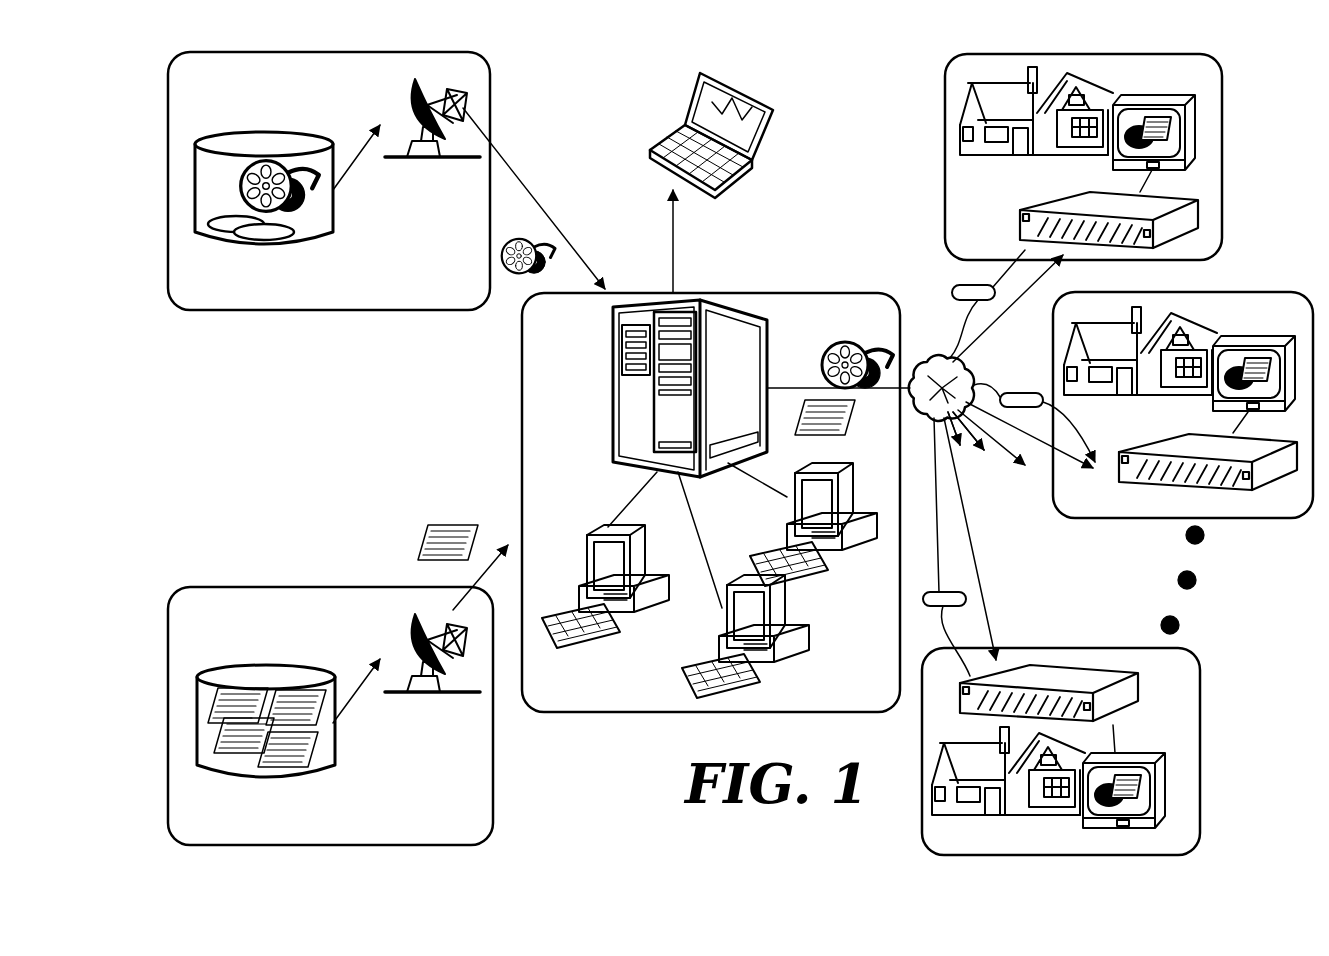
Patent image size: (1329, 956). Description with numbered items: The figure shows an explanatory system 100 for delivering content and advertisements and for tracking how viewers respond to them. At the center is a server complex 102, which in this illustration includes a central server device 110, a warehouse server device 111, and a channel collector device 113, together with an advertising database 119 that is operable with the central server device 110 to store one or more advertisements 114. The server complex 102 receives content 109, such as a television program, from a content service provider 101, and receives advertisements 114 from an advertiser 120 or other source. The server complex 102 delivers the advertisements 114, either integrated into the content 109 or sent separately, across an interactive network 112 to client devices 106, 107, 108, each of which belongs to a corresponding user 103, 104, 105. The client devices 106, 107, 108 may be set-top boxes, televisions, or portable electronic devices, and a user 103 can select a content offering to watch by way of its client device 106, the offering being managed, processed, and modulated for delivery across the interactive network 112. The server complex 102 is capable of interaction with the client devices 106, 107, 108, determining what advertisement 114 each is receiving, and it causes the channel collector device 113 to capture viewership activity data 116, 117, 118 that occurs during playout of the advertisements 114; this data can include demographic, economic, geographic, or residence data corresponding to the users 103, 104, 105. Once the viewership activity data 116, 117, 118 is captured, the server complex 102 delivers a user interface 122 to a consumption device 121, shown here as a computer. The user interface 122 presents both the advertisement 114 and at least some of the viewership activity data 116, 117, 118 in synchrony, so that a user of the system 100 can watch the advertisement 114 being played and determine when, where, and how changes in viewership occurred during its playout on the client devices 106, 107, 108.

The system 100 is at (303, 408).
The content service provider 101 is at (491, 110).
The server complex 102 is at (711, 482).
The user 103 is at (1039, 157).
The user 104 is at (1183, 384).
The user 105 is at (1094, 751).
The client device 106 is at (1019, 225).
The client device 107 is at (1118, 468).
The client device 108 is at (1114, 694).
The content 109 is at (850, 343).
The central server device 110 is at (611, 356).
The warehouse server device 111 is at (662, 600).
The interactive network 112 is at (921, 362).
The channel collector device 113 is at (715, 652).
The advertisement 114 is at (838, 428).
The viewership activity data 116 is at (953, 290).
The viewership activity data 117 is at (1008, 393).
The viewership activity data 118 is at (966, 598).
The advertising database 119 is at (848, 540).
The advertiser 120 is at (494, 805).
The consumption device 121 is at (718, 120).
The user interface 122 is at (735, 85).